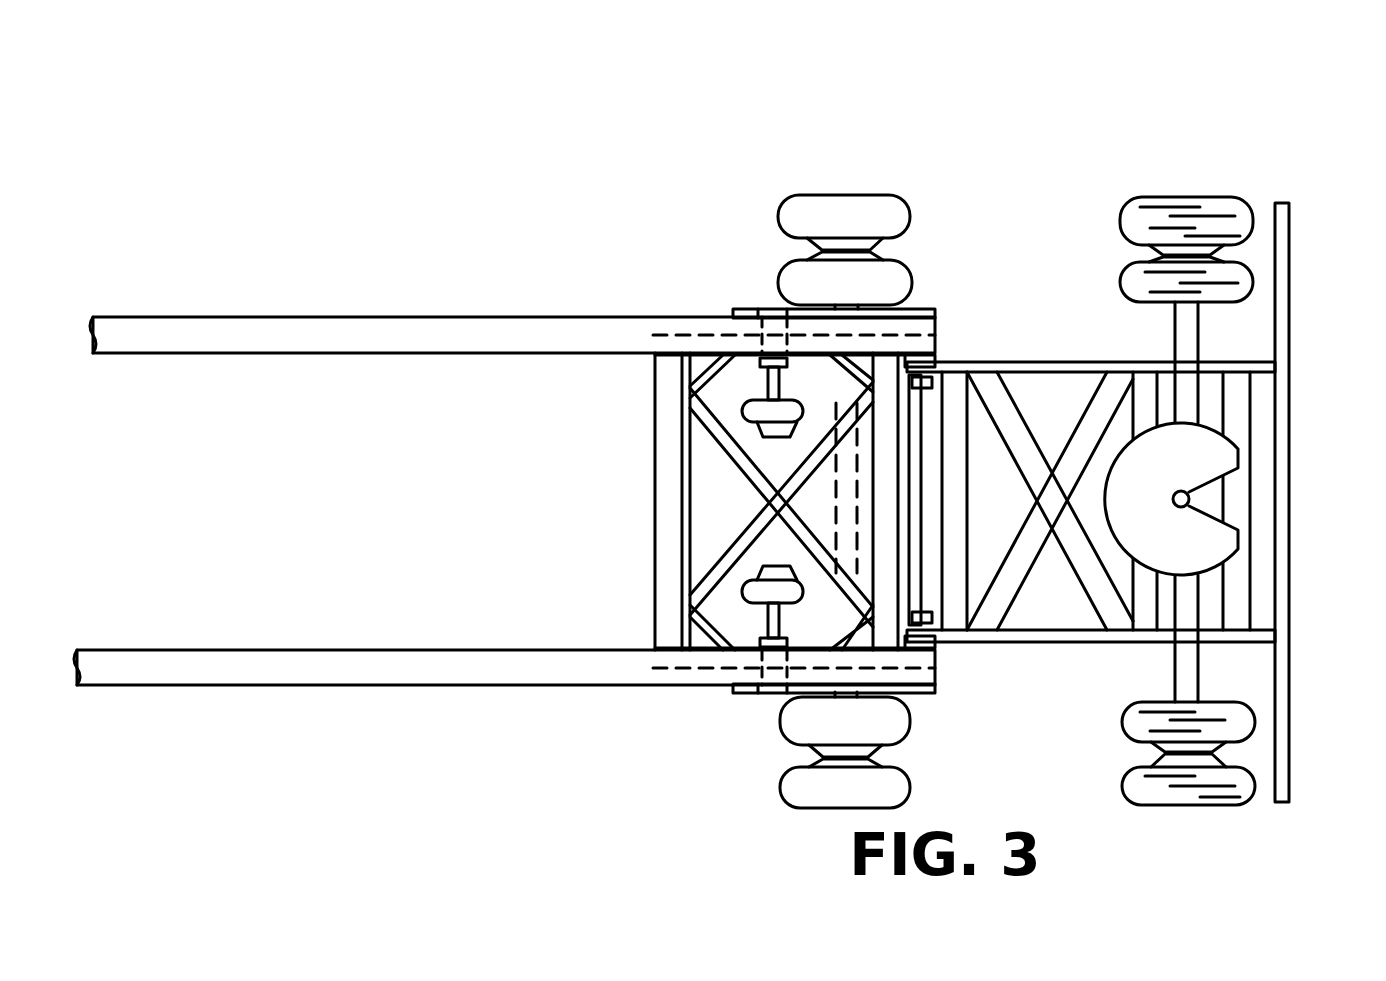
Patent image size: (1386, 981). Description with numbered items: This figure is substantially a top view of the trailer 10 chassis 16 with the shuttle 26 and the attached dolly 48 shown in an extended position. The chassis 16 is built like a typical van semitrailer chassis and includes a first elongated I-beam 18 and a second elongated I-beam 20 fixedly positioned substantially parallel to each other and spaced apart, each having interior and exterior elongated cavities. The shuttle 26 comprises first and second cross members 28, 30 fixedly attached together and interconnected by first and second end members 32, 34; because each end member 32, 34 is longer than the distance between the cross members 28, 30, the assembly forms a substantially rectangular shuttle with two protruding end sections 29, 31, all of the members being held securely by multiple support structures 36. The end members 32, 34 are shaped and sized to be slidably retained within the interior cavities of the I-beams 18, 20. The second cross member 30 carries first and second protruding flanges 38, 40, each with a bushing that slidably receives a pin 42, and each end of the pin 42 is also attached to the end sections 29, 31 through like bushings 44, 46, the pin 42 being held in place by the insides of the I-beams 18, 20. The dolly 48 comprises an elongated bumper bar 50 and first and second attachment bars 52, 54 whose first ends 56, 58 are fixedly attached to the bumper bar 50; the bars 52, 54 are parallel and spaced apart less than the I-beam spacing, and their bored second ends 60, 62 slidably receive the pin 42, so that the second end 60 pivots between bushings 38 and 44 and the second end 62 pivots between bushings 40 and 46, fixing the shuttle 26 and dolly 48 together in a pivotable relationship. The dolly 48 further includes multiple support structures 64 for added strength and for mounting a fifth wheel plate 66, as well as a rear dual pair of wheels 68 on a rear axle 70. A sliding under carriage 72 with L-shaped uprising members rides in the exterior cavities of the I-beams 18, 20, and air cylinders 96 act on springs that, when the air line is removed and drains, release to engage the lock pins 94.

The trailer 10 is at (893, 175).
The chassis 16 is at (432, 333).
The first elongated I-beam 18 is at (298, 333).
The second elongated I-beam 20 is at (177, 670).
The shuttle 26 is at (662, 452).
The first cross member 28 is at (662, 565).
The protruding end section 29 is at (965, 280).
The second cross member 30 is at (880, 485).
The protruding end section 31 is at (937, 663).
The first end member 32 is at (662, 345).
The second end member 34 is at (662, 660).
The support structures 36 is at (748, 542).
The first protruding flange 38 is at (883, 432).
The second protruding flange 40 is at (907, 612).
The pin 42 is at (917, 547).
The bushing 44 is at (865, 252).
The bushing 46 is at (918, 662).
The dolly 48 is at (1073, 362).
The elongated bumper bar 50 is at (1283, 262).
The first attachment bar 52 is at (1277, 365).
The second attachment bar 54 is at (1280, 633).
The first end 56 is at (1277, 368).
The first end 58 is at (1283, 638).
The second end 60 is at (930, 370).
The second end 62 is at (933, 657).
The support structures 64 is at (1020, 543).
The fifth wheel plate 66 is at (1171, 499).
The rear dual pair of wheels 68 is at (1133, 280).
The rear axle 70 is at (1208, 502).
The sliding under carriage 72 is at (743, 308).
The lock pins 94 is at (767, 310).
The air cylinders 96 is at (790, 410).